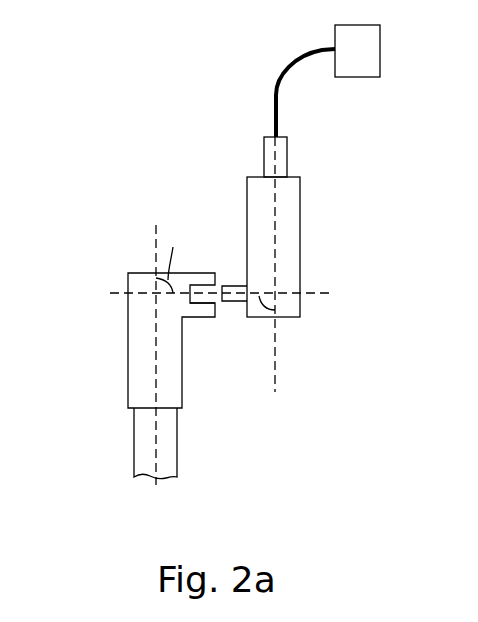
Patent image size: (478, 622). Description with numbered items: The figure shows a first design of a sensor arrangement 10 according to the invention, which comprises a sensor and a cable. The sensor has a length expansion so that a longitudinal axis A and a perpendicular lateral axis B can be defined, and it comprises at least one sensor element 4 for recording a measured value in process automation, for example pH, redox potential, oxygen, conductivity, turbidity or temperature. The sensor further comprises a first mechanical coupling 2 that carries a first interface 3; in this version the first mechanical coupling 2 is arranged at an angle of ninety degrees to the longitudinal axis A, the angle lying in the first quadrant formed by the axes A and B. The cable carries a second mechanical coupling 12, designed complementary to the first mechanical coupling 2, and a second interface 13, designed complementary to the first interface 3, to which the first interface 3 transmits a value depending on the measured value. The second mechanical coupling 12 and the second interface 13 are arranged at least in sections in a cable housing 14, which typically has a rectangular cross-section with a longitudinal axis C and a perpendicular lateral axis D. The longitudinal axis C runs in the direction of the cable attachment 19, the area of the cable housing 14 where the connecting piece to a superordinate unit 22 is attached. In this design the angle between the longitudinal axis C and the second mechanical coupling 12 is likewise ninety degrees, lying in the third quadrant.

The sensor arrangement 10 is at (95, 140).
The first mechanical coupling 2 is at (180, 280).
The first interface 3 is at (202, 304).
The sensor element 4 is at (145, 450).
The second mechanical coupling 12 is at (293, 310).
The second interface 13 is at (232, 304).
The cable housing 14 is at (287, 227).
The cable attachment 19 is at (277, 160).
The superordinate unit 22 is at (365, 48).